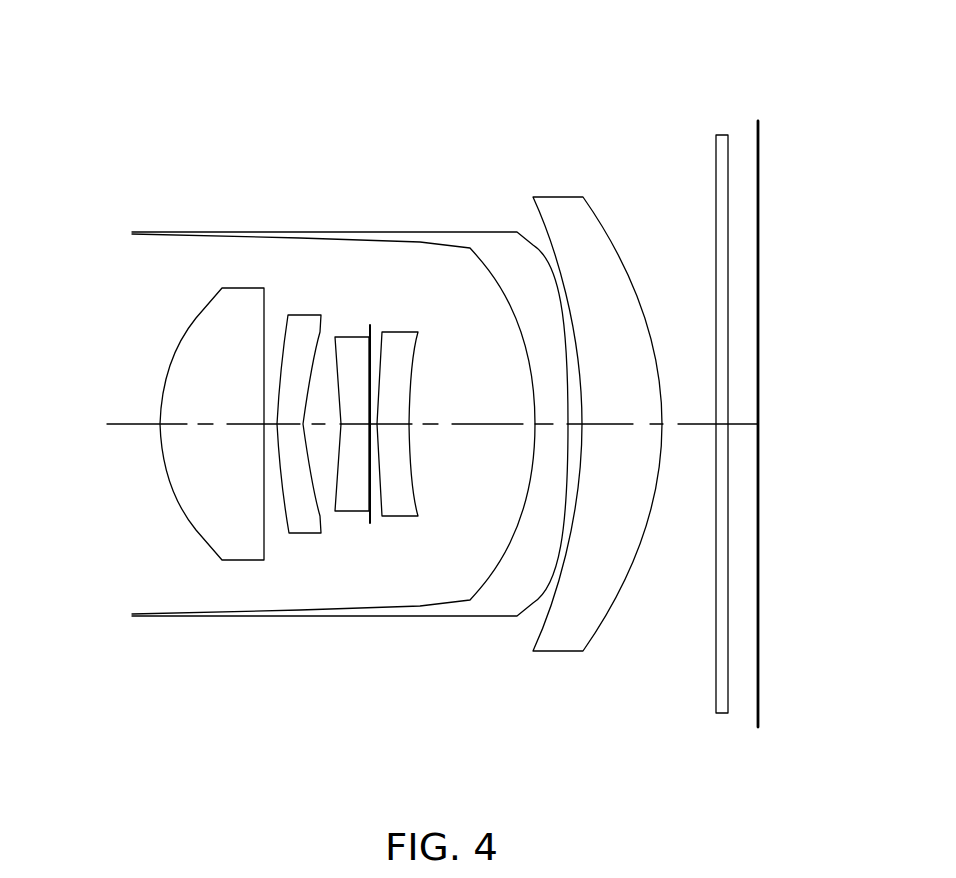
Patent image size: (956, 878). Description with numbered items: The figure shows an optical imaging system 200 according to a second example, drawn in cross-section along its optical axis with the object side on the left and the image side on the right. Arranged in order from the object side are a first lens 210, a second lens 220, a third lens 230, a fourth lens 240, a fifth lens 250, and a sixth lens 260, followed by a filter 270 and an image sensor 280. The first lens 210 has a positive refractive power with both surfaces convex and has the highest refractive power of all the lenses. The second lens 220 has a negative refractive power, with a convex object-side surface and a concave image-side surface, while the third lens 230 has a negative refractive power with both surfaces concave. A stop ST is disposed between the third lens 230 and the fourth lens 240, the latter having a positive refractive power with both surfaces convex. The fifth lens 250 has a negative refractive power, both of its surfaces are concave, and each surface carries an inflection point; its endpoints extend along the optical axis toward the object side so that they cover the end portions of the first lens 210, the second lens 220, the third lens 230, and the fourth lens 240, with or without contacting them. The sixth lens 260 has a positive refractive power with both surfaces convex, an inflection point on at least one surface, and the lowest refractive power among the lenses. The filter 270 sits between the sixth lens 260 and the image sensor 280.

The optical imaging system 200 is at (403, 136).
The first lens 210 is at (238, 559).
The second lens 220 is at (305, 529).
The third lens 230 is at (350, 505).
The fourth lens 240 is at (396, 505).
The fifth lens 250 is at (487, 612).
The sixth lens 260 is at (563, 645).
The filter 270 is at (717, 712).
The image sensor 280 is at (758, 728).
The stop ST is at (370, 331).